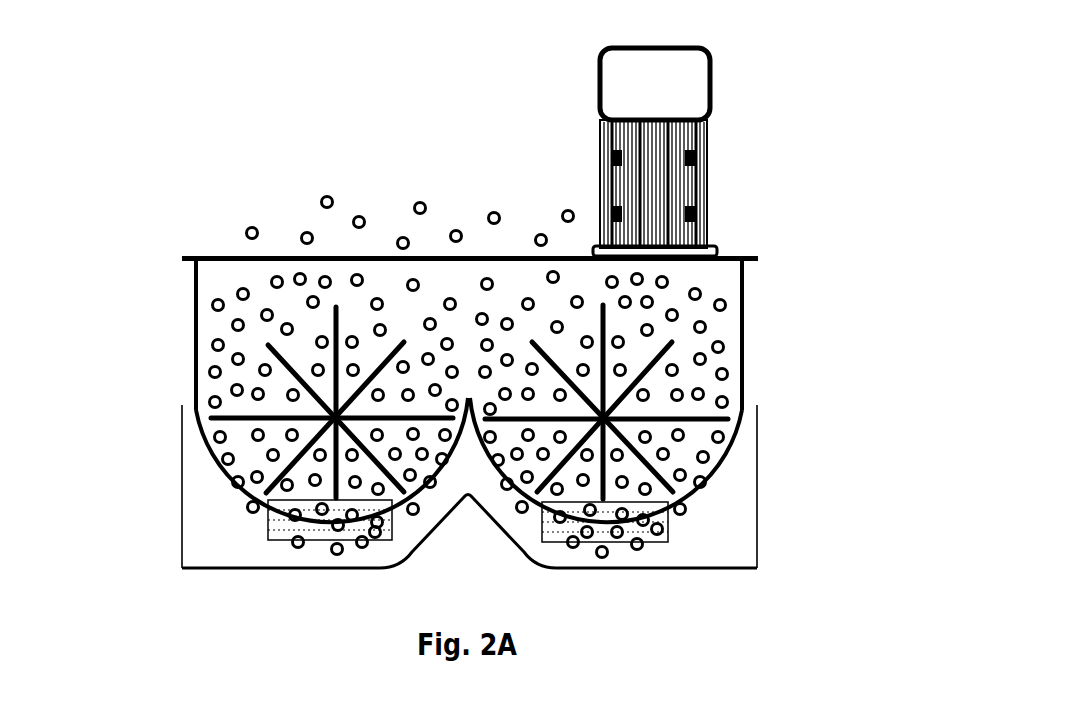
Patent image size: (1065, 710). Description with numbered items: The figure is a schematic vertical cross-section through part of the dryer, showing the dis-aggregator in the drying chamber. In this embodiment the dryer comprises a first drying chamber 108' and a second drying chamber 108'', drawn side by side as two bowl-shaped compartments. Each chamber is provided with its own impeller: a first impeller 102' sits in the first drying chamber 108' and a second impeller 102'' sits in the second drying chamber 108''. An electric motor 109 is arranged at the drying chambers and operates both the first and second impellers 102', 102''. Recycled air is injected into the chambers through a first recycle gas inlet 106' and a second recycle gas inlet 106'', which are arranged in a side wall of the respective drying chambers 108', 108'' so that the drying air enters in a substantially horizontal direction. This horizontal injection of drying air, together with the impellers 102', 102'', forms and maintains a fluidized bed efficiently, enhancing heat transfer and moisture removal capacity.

The first drying chamber 108' is at (257, 338).
The first impeller 102' is at (332, 309).
The first recycle gas inlet 106' is at (267, 575).
The second drying chamber 108'' is at (681, 317).
The second impeller 102'' is at (663, 440).
The second recycle gas inlet 106'' is at (664, 599).
The electric motor 109 is at (628, 155).